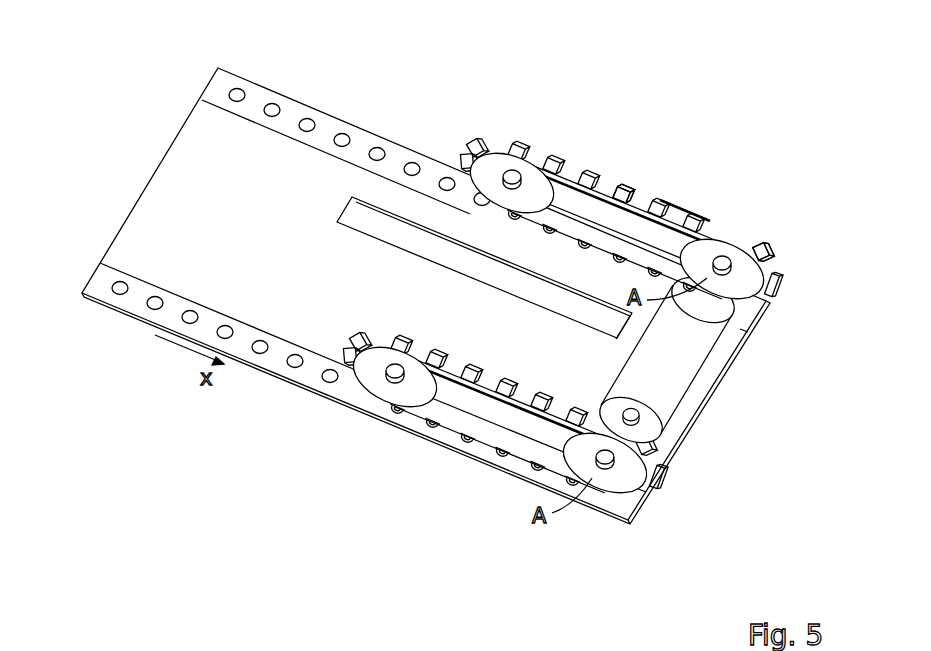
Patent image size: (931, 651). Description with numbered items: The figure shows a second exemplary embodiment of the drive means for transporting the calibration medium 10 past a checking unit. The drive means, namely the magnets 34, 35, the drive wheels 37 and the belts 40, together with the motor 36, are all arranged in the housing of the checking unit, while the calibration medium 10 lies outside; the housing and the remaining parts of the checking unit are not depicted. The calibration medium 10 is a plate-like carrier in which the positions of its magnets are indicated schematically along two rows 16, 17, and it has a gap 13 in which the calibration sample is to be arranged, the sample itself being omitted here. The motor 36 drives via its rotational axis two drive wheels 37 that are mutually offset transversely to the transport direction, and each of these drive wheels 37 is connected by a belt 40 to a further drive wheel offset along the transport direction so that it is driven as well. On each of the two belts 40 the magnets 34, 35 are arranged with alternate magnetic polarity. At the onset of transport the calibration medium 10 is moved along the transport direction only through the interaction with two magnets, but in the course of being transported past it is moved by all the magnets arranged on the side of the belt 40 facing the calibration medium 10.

The calibration medium 10 is at (162, 162).
The gap 13 is at (341, 200).
The row 16 is at (211, 83).
The row 17 is at (93, 272).
The magnet 34 is at (725, 223).
The magnet 35 is at (688, 212).
The motor 36 is at (683, 385).
The drive wheel 37 is at (777, 296).
The belt 40 is at (636, 196).